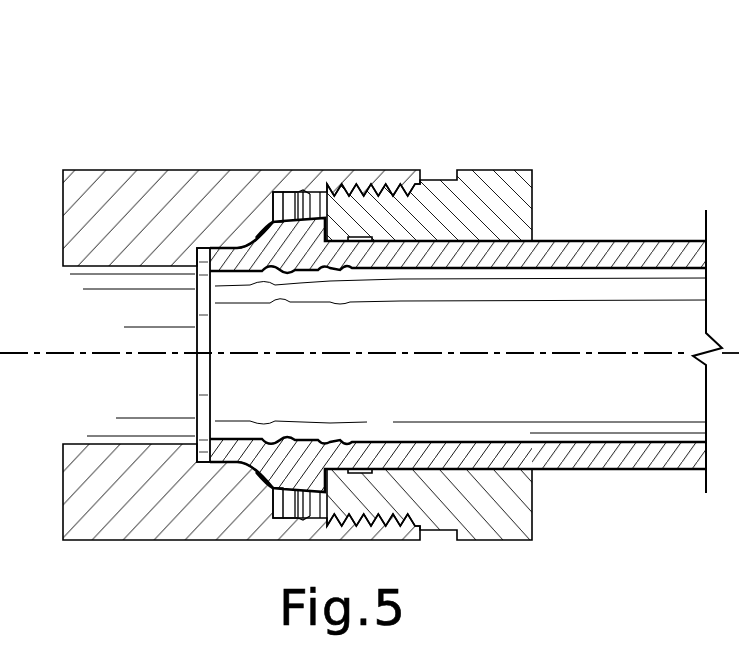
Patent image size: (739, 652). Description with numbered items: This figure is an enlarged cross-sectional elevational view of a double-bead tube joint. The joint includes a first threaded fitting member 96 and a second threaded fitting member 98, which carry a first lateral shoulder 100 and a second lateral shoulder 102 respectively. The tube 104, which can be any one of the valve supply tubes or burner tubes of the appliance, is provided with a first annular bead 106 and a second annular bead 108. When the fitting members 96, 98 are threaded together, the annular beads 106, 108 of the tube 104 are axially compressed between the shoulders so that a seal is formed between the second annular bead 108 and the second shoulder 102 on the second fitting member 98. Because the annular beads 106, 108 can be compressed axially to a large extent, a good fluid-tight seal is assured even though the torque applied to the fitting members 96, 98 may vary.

The first threaded fitting member 96 is at (497, 170).
The second threaded fitting member 98 is at (120, 170).
The first lateral shoulder 100 is at (316, 216).
The second lateral shoulder 102 is at (287, 192).
The tube 104 is at (627, 241).
The first annular bead 106 is at (303, 208).
The second annular bead 108 is at (276, 224).